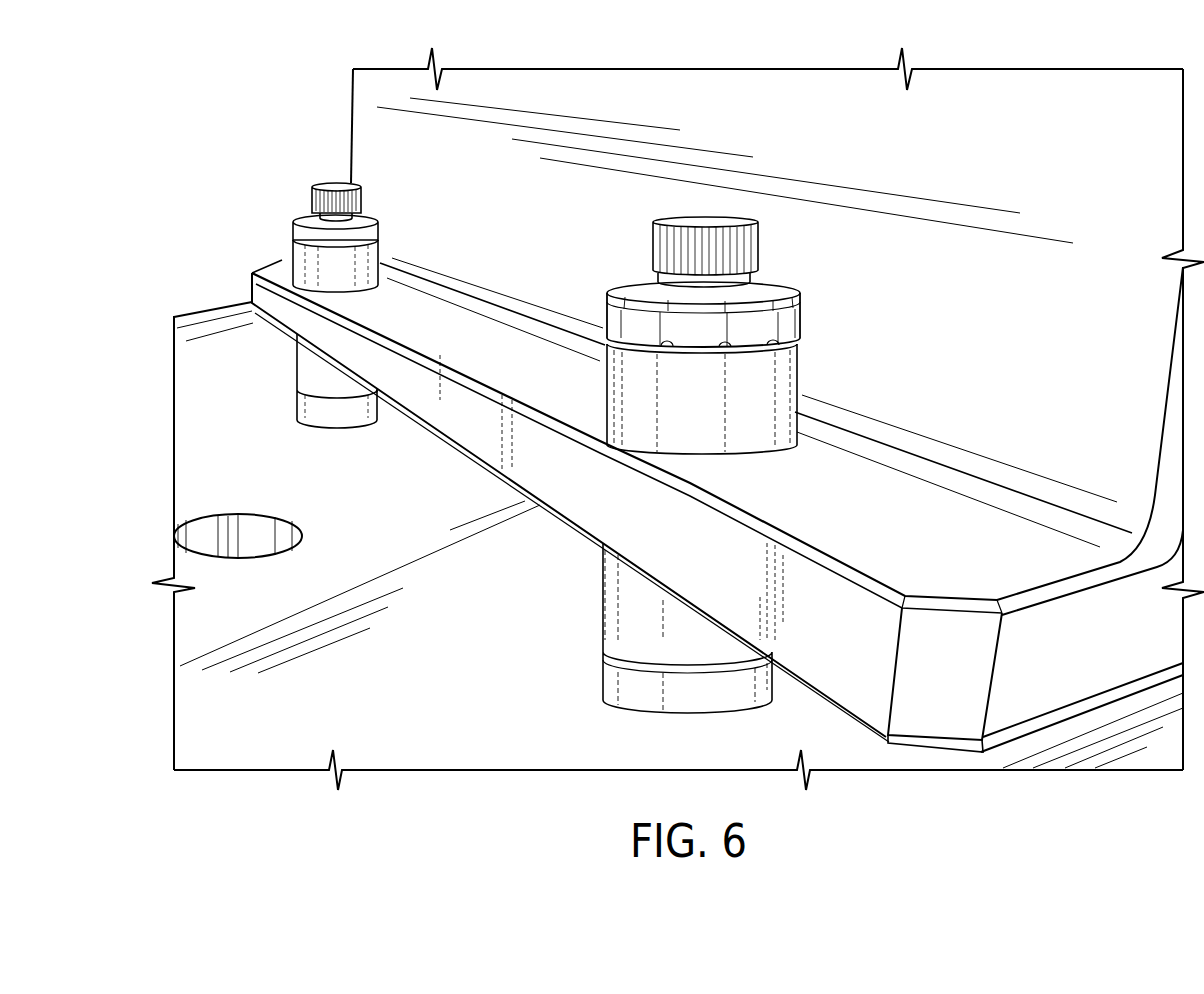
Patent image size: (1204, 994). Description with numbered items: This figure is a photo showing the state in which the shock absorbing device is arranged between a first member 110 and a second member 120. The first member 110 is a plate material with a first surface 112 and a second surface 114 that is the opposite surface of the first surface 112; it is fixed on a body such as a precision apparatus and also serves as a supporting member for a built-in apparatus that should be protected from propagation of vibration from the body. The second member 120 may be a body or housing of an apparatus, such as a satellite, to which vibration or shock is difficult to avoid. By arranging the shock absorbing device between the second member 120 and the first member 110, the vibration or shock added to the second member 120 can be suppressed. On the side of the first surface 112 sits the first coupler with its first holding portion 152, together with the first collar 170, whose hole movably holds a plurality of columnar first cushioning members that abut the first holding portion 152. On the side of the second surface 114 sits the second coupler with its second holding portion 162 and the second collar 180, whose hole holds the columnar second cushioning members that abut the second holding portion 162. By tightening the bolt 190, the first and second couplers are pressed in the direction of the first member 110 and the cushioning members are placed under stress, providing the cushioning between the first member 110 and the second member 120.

The first member 110 is at (627, 506).
The first surface 112 is at (483, 367).
The second surface 114 is at (487, 482).
The second member 120 is at (505, 669).
The first holding portion 152 is at (787, 323).
The second holding portion 162 is at (618, 683).
The first collar 170 is at (760, 392).
The second collar 180 is at (623, 612).
The bolt 190 is at (658, 243).